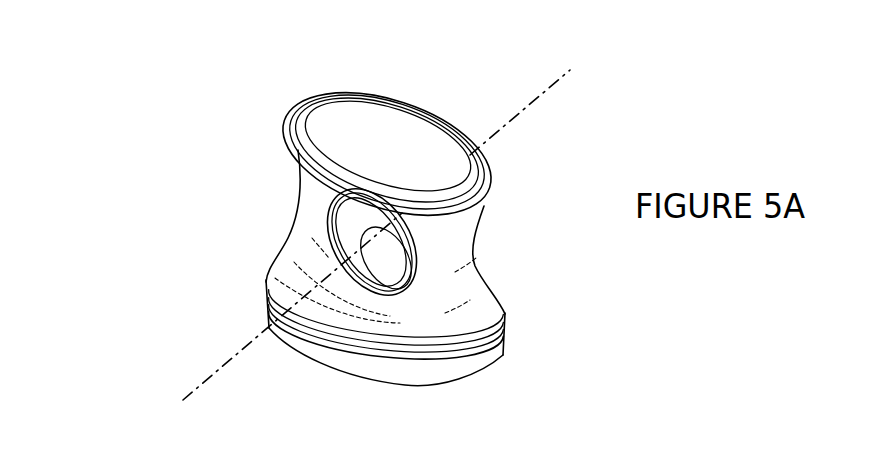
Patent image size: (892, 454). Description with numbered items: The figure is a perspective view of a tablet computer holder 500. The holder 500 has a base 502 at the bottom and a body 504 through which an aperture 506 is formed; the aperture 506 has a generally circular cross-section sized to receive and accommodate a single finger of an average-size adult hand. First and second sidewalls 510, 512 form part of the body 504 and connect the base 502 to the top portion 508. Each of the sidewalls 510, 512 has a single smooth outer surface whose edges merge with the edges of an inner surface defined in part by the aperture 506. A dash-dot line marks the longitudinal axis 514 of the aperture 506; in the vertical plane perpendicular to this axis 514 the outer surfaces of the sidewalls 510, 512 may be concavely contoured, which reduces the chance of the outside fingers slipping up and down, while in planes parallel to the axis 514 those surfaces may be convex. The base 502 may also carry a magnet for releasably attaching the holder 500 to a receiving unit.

The tablet computer holder 500 is at (155, 73).
The base 502 is at (501, 348).
The body 504 is at (463, 305).
The aperture 506 is at (368, 215).
The top portion 508 is at (394, 139).
The first sidewall 510 is at (298, 200).
The second sidewall 512 is at (463, 255).
The longitudinal axis 514 is at (353, 248).